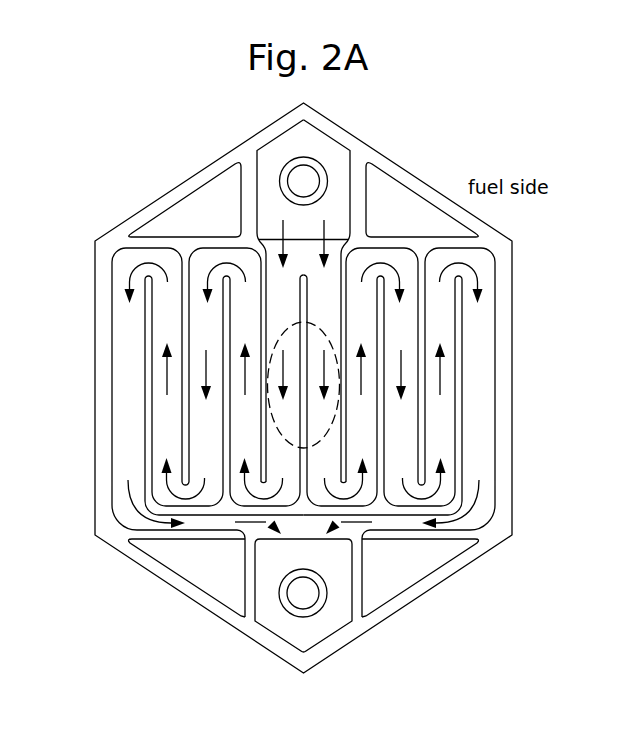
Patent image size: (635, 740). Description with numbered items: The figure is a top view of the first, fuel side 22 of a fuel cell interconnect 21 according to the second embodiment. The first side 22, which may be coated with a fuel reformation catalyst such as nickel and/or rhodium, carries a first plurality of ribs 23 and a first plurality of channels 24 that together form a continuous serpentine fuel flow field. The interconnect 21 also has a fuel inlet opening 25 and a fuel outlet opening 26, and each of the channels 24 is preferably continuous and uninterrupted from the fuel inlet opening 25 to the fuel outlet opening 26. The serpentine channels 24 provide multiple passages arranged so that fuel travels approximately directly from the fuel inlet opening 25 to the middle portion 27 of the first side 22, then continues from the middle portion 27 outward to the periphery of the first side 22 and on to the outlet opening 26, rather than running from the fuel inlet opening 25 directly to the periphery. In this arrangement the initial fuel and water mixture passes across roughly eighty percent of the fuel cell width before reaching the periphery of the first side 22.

The interconnect 21 is at (551, 306).
The first (fuel) side 22 is at (529, 457).
The first plurality of ribs 23 is at (481, 378).
The first plurality of channels 24 is at (124, 380).
The fuel inlet opening 25 is at (313, 167).
The fuel outlet opening 26 is at (311, 611).
The middle portion 27 is at (263, 332).